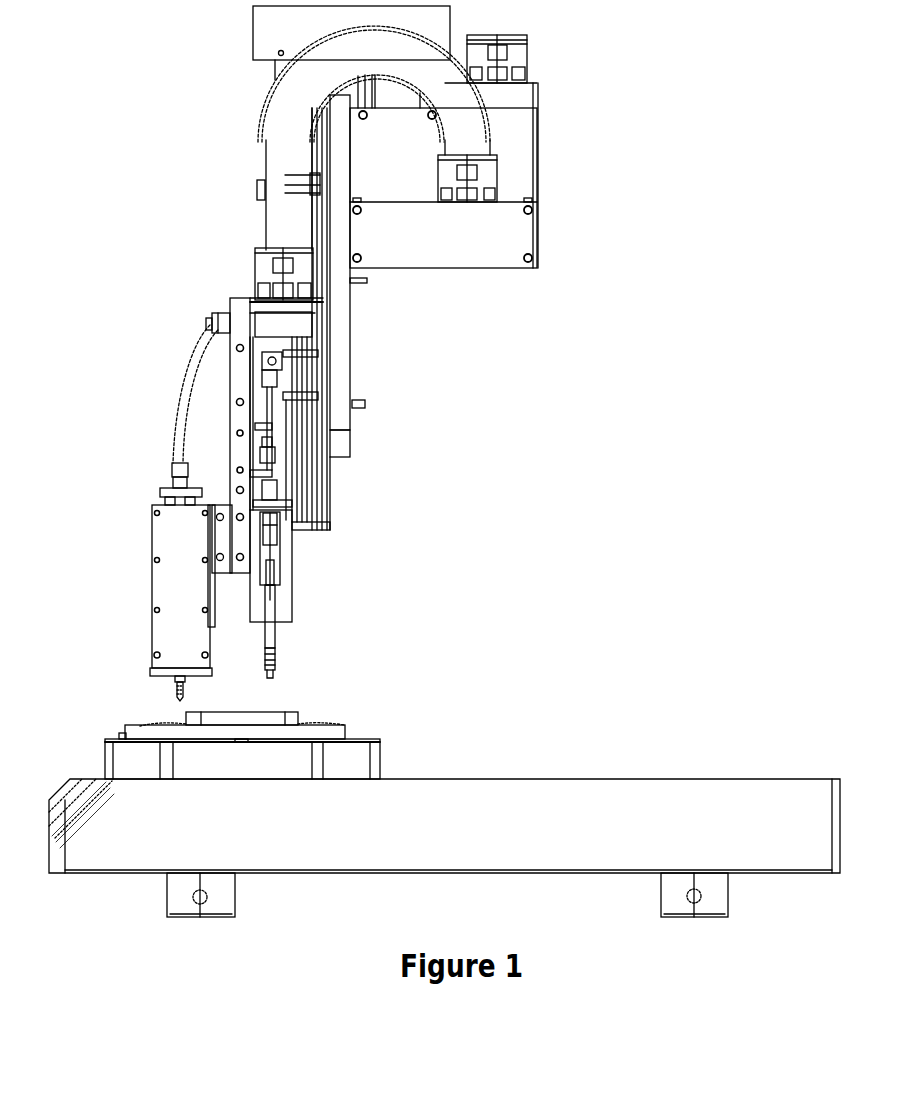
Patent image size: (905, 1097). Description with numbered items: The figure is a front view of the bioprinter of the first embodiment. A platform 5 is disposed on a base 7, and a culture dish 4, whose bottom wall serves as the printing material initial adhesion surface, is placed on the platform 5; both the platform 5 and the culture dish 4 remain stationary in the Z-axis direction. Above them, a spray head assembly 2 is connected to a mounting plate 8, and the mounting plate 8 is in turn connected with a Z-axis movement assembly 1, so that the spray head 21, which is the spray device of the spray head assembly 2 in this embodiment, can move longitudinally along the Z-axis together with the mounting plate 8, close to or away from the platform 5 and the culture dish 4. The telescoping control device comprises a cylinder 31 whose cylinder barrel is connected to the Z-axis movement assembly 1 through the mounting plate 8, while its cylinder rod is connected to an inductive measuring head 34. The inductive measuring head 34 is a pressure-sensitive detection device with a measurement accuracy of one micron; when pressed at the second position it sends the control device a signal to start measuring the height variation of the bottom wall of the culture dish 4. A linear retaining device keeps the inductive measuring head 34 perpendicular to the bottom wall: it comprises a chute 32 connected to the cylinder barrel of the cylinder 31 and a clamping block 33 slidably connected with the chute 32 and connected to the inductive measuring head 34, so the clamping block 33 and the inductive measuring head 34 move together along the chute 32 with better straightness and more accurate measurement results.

The Z-axis movement assembly 1 is at (318, 420).
The spray head assembly 2 is at (150, 580).
The spray head 21 is at (176, 688).
The cylinder 31 is at (270, 482).
The chute 32 is at (285, 542).
The clamping block 33 is at (274, 580).
The inductive measuring head 34 is at (272, 642).
The culture dish 4 is at (273, 718).
The platform 5 is at (288, 764).
The base 7 is at (448, 837).
The mounting plate 8 is at (242, 298).